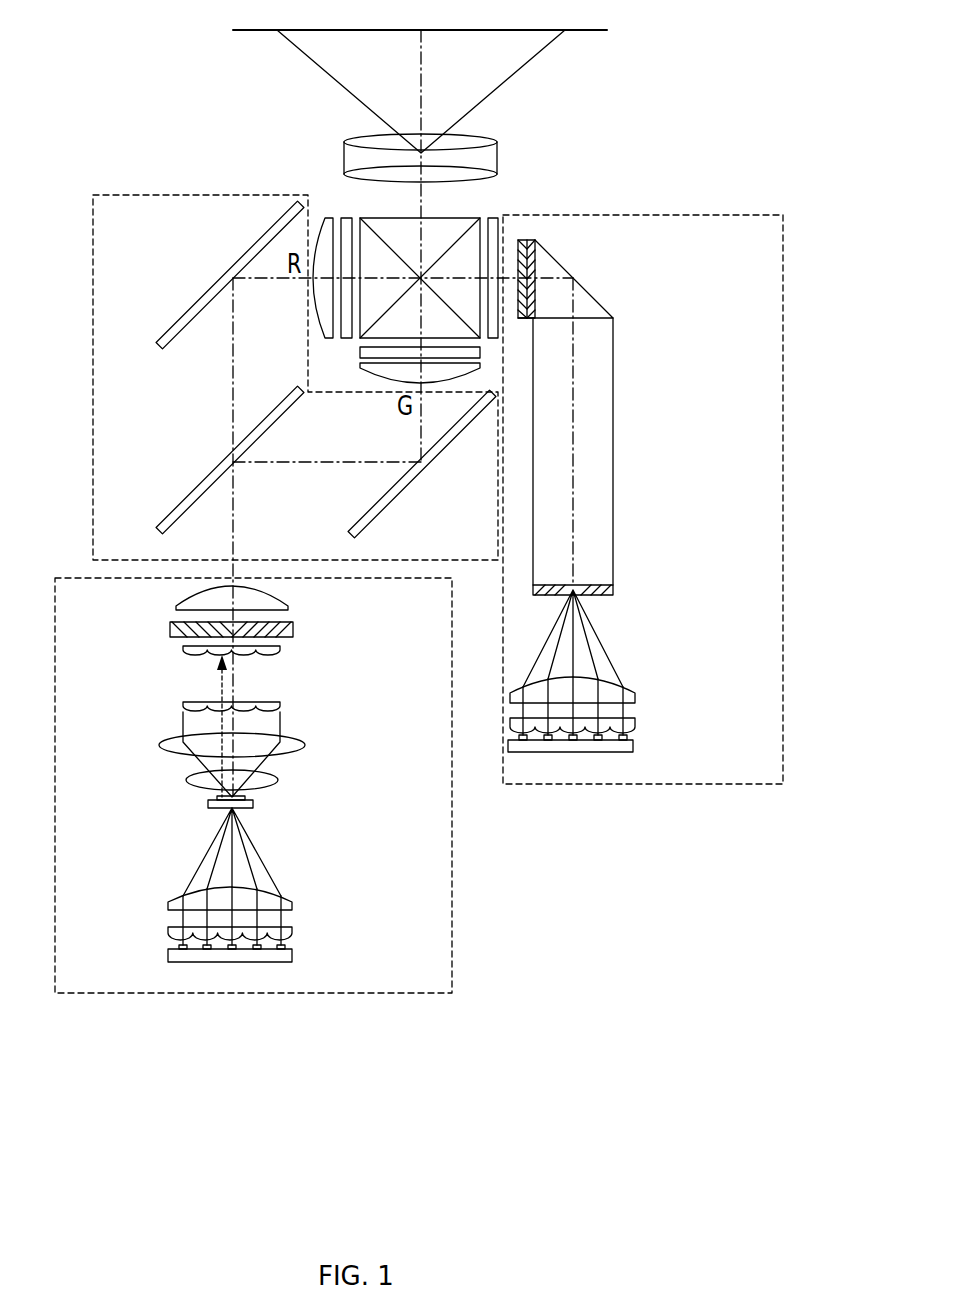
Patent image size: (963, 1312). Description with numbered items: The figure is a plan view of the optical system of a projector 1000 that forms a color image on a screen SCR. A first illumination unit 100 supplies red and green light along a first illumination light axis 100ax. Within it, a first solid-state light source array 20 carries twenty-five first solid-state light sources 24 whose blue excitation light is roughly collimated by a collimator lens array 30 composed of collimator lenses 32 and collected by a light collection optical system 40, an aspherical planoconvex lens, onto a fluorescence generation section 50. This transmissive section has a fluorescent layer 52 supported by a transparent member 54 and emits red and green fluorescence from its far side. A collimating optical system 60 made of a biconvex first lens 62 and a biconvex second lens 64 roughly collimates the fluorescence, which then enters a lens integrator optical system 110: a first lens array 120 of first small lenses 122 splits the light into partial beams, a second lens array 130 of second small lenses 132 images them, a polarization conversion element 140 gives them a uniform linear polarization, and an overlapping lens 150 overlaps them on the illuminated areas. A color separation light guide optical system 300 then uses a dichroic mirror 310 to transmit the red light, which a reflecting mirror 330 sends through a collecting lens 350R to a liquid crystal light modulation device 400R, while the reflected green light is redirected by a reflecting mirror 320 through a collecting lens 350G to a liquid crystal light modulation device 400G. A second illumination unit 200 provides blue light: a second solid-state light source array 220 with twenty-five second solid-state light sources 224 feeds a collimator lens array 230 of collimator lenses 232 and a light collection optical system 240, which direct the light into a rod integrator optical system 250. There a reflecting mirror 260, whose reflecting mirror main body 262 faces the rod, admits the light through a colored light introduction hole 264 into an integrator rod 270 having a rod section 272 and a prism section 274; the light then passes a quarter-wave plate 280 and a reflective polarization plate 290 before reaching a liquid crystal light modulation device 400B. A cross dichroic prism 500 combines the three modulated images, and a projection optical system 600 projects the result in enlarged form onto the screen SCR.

The projector 1000 is at (790, 49).
The screen SCR is at (598, 31).
The first illumination unit 100 is at (340, 995).
The first illumination light axis 100ax is at (232, 573).
The second illumination unit 200 is at (672, 786).
The color separation light guide optical system 300 is at (90, 408).
The dichroic mirror 310 is at (190, 493).
The reflecting mirror 320 is at (393, 501).
The reflecting mirror 330 is at (173, 323).
The collecting lens 350R is at (325, 216).
The collecting lens 350G is at (358, 366).
The liquid crystal light modulation device for red light 400R is at (345, 216).
The liquid crystal light modulation device for green light 400G is at (360, 351).
The liquid crystal light modulation device for blue light 400B is at (498, 218).
The cross dichroic prism 500 is at (465, 218).
The projection optical system 600 is at (344, 152).
The first solid-state light source array 20 is at (305, 955).
The first solid-state light sources 24 is at (176, 946).
The collimator lens array 30 is at (303, 932).
The collimator lenses 32 is at (176, 935).
The light collection optical system 40 is at (292, 908).
The fluorescence generation section 50 is at (327, 768).
The fluorescent layer 52 is at (246, 797).
The transparent member 54 is at (253, 804).
The collimating optical system 60 is at (99, 740).
The first lens 62 is at (186, 780).
The second lens 64 is at (158, 745).
The lens integrator optical system 110 is at (372, 583).
The first lens array 120 is at (282, 703).
The first small lenses 122 is at (184, 707).
The second lens array 130 is at (282, 648).
The second small lenses 132 is at (184, 652).
The polarization conversion element 140 is at (293, 628).
The overlapping lens 150 is at (288, 606).
The second solid-state light source array 220 is at (645, 745).
The second solid-state light sources 224 is at (628, 737).
The collimator lens array 230 is at (642, 721).
The collimator lenses 232 is at (630, 731).
The light collection optical system 240 is at (637, 698).
The rod integrator optical system 250 is at (722, 223).
The reflecting mirror 260 is at (671, 578).
The reflecting mirror main body 262 is at (613, 590).
The colored light introduction hole 264 is at (590, 600).
The integrator rod 270 is at (672, 285).
The rod section 272 is at (613, 392).
The prism section 274 is at (588, 294).
The λ/4 plate 280 is at (535, 240).
The reflective polarization plate 290 is at (522, 236).